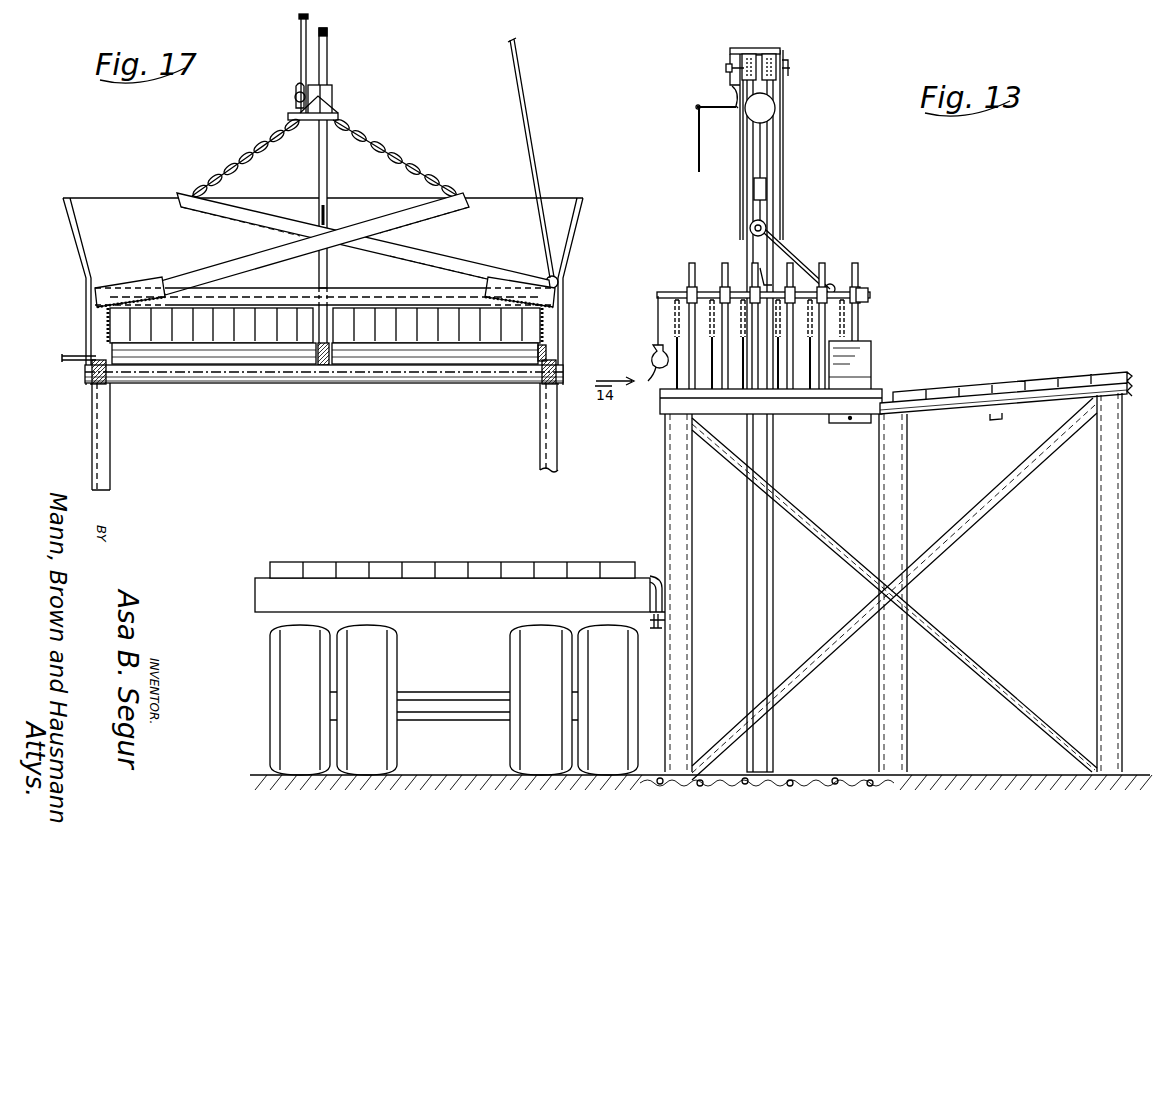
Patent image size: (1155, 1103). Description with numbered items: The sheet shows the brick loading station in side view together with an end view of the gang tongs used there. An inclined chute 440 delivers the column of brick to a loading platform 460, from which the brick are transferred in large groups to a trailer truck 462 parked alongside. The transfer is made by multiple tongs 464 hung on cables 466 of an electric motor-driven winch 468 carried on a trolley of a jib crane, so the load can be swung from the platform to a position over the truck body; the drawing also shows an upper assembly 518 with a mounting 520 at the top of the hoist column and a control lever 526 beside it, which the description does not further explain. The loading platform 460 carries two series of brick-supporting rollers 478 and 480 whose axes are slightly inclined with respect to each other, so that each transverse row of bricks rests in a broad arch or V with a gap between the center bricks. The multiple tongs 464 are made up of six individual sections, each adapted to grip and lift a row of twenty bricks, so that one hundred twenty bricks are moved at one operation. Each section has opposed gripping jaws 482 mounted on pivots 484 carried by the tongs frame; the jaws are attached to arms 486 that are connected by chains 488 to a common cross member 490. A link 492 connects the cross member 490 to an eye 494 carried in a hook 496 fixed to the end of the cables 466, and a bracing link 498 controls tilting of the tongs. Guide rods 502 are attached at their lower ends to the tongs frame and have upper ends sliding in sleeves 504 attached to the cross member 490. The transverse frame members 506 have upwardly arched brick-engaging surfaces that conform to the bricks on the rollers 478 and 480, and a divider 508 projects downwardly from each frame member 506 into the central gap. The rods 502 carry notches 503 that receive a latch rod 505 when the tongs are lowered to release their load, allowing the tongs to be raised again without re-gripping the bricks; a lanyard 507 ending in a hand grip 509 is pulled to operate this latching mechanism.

In FIG. 13, the chute 440 is at (1046, 386).
In FIG. 17, the loading platform 460 is at (285, 384).
In FIG. 13, the loading platform 460 is at (789, 412).
In FIG. 13, the trailer truck 462 is at (255, 590).
In FIG. 13, the multiple tongs 464 is at (828, 290).
In FIG. 13, the cables 466 is at (782, 162).
In FIG. 13, the electric motor-driven winch 468 is at (768, 108).
In FIG. 17, the brick-supporting rollers 478 is at (418, 365).
In FIG. 17, the brick-supporting rollers 480 is at (209, 360).
In FIG. 17, the gripping jaws 482 is at (108, 325).
In FIG. 17, the pivots 484 is at (90, 299).
In FIG. 17, the arms 486 is at (218, 261).
In FIG. 17, the chains 488 is at (256, 138).
In FIG. 17, the cross member 490 is at (307, 121).
In FIG. 17, the link 492 is at (301, 59).
In FIG. 13, the eye 494 is at (764, 228).
In FIG. 13, the hook 496 is at (766, 190).
In FIG. 13, the bracing link 498 is at (800, 257).
In FIG. 17, the guide rods 502 is at (327, 176).
In FIG. 17, the notches 503 is at (327, 208).
In FIG. 17, the sleeves 504 is at (332, 92).
In FIG. 17, the latch rod 505 is at (312, 88).
In FIG. 13, the latch rod 505 is at (868, 291).
In FIG. 17, the transverse frame members 506 is at (283, 292).
In FIG. 13, the lanyard 507 is at (657, 340).
In FIG. 17, the divider 508 is at (329, 308).
In FIG. 13, the hand grip 509 is at (650, 378).
In FIG. 13, the trolley 518 is at (750, 48).
In FIG. 13, the trolley frame 520 is at (732, 62).
In FIG. 13, the control lever 526 is at (697, 151).